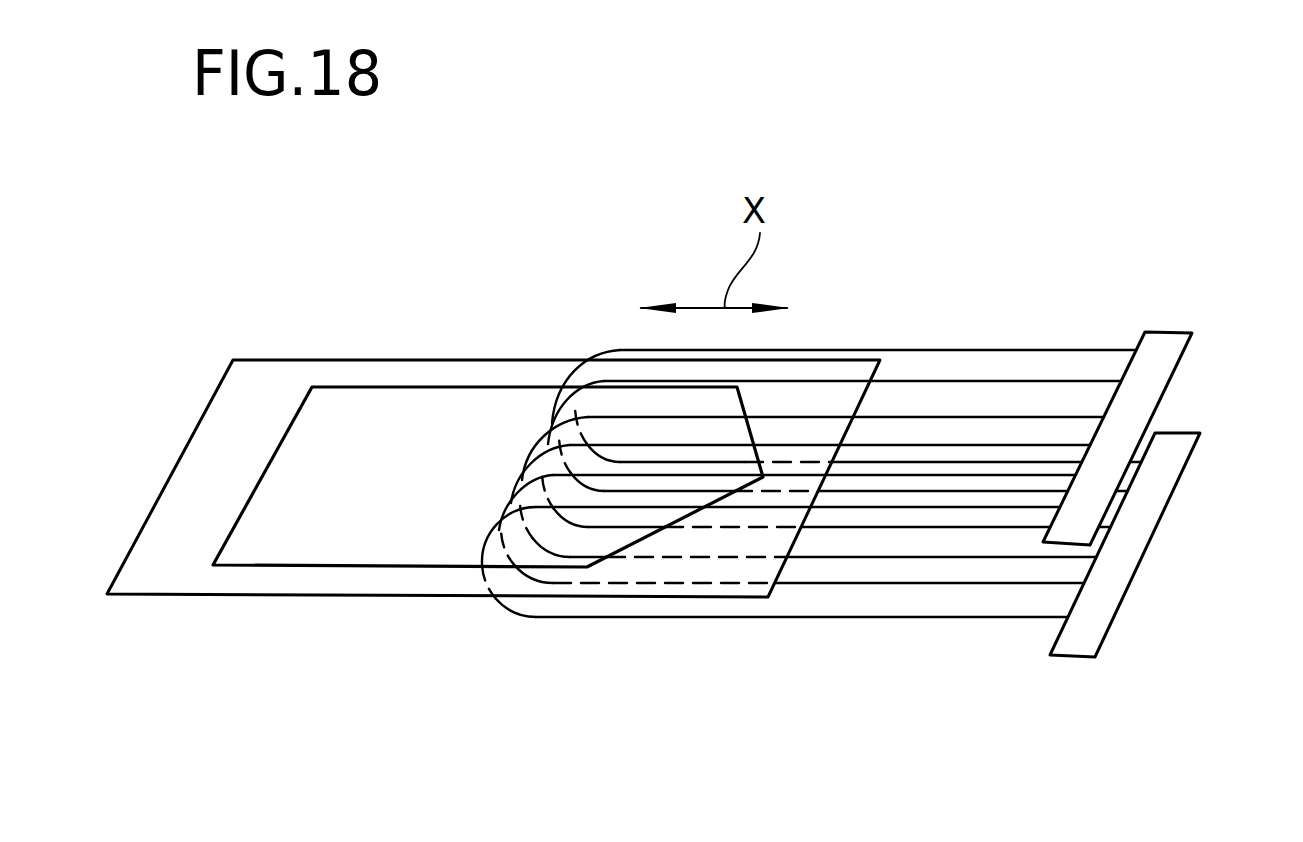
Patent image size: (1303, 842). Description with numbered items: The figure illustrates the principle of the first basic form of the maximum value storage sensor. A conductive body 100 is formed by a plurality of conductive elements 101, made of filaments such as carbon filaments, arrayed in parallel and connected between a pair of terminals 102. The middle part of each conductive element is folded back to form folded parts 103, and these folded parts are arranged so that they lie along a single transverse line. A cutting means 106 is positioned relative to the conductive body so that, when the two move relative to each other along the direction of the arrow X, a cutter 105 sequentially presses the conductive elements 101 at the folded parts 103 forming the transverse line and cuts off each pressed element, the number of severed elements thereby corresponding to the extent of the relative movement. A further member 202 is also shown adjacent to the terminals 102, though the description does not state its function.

The optical fiber ribbon 100 is at (811, 521).
The optical fibers 101 is at (952, 381).
The fiber holding member 102 is at (1167, 343).
The window opening 103 is at (508, 503).
The bent portion of fibers 105 is at (632, 538).
The plate 106 is at (471, 375).
The clamp member 202 is at (1132, 535).